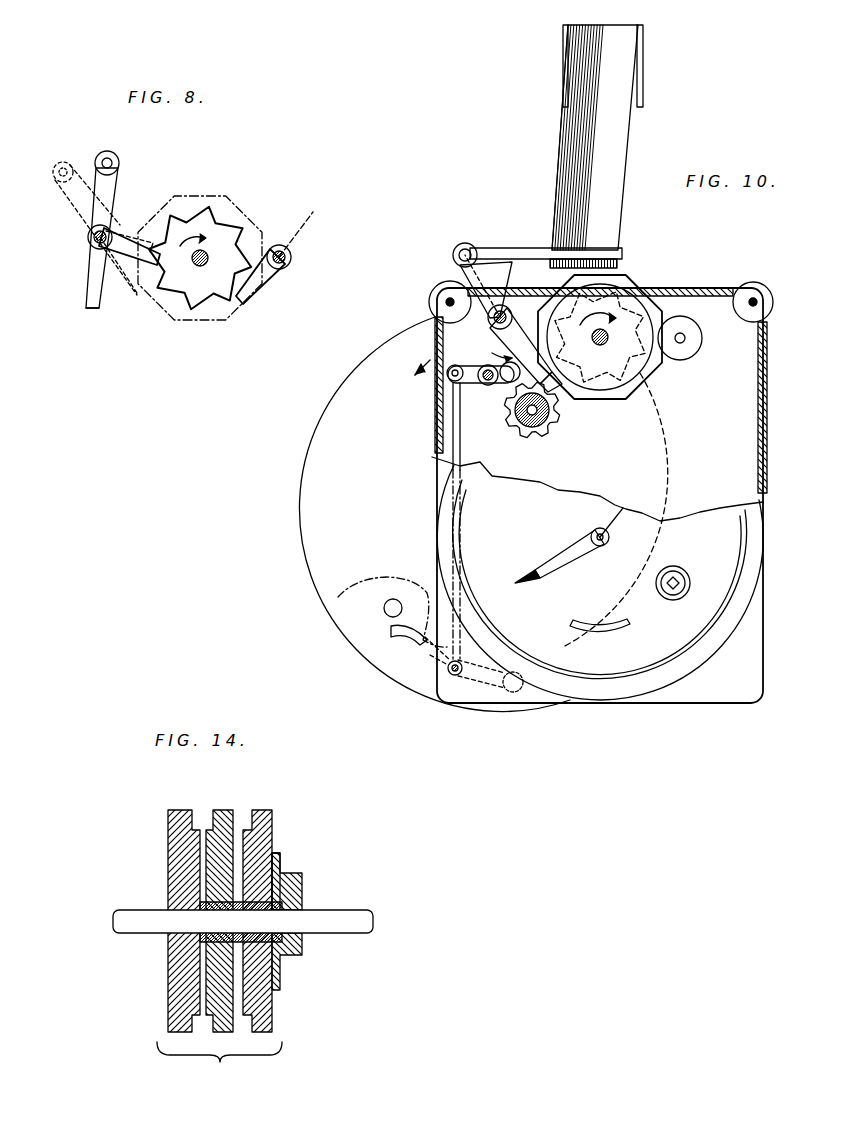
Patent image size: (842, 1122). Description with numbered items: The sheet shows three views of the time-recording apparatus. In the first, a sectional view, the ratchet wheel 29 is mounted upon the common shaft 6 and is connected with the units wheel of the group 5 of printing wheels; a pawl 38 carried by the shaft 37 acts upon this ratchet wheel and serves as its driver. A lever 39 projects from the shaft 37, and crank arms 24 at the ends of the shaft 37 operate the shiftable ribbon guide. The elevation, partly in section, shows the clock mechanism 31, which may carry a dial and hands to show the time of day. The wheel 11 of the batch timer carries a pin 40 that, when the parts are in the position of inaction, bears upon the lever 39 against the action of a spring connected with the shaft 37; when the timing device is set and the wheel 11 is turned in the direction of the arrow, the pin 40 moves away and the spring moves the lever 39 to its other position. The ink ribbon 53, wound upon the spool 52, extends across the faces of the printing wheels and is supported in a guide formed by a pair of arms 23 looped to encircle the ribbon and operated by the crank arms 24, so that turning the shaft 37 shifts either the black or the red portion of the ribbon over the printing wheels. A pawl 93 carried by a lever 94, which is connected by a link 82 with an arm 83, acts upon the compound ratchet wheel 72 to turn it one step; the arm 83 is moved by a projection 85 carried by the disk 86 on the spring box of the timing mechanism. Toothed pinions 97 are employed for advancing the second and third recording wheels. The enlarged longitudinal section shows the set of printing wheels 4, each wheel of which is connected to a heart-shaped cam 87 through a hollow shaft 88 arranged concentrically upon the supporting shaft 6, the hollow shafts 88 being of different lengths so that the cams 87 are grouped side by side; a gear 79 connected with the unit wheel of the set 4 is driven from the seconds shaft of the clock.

In FIG. 14, the set of printing wheels 4 is at (219, 954).
In FIG. 8, the group of printing wheels 5 is at (274, 253).
In FIG. 8, the common shaft 6 is at (200, 266).
In FIG. 10, the common shaft 6 is at (604, 345).
In FIG. 14, the common shaft 6 is at (373, 918).
In FIG. 10, the wheel 11 is at (313, 482).
In FIG. 10, the arms 23 is at (562, 222).
In FIG. 8, the crank arms 24 is at (97, 187).
In FIG. 10, the crank arms 24 is at (455, 268).
In FIG. 8, the ratchet wheel 29 is at (225, 210).
In FIG. 10, the ratchet wheel 29 is at (637, 287).
In FIG. 10, the clock mechanism 31 is at (575, 702).
In FIG. 8, the shaft 37 is at (90, 237).
In FIG. 10, the shaft 37 is at (500, 305).
In FIG. 8, the pawl 38 is at (128, 228).
In FIG. 8, the lever 39 is at (90, 310).
In FIG. 10, the lever 39 is at (528, 300).
In FIG. 10, the pin 40 is at (492, 353).
In FIG. 10, the spool 52 is at (640, 45).
In FIG. 10, the ink ribbon 53 is at (572, 152).
In FIG. 10, the compound ratchet wheel 72 is at (550, 425).
In FIG. 14, the gear 79 is at (280, 990).
In FIG. 10, the link 82 is at (437, 433).
In FIG. 10, the arm 83 is at (475, 680).
In FIG. 10, the projection 85 is at (384, 606).
In FIG. 10, the disk 86 is at (395, 640).
In FIG. 14, the heart-shaped cam 87 is at (305, 880).
In FIG. 14, the hollow shafts 88 is at (200, 870).
In FIG. 10, the pawl 93 is at (483, 413).
In FIG. 10, the lever 94 is at (448, 370).
In FIG. 10, the toothed pinions 97 is at (702, 343).